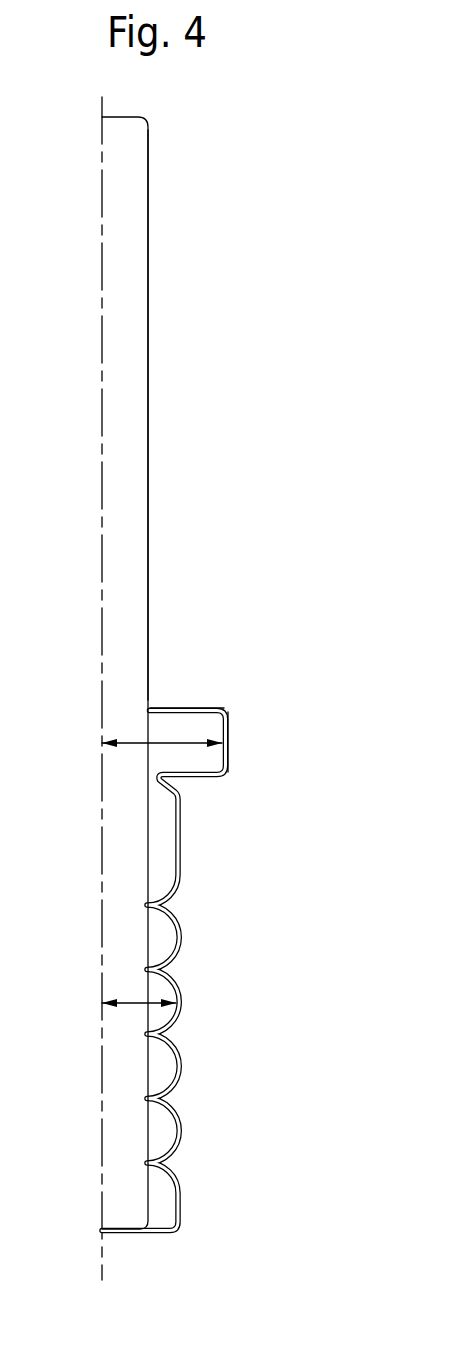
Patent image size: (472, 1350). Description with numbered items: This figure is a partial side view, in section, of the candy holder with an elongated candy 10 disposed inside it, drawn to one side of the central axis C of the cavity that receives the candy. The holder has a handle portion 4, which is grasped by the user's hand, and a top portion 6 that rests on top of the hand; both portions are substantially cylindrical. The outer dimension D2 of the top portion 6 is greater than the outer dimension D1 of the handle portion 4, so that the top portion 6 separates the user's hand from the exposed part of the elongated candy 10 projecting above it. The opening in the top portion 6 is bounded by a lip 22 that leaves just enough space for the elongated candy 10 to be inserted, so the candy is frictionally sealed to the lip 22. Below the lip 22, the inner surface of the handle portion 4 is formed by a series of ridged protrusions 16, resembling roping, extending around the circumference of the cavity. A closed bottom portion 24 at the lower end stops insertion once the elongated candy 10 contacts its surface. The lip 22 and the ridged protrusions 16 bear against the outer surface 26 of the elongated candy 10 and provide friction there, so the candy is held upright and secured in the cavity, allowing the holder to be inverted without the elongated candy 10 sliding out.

The elongated candy 10 is at (165, 121).
The outer surface of the elongated candy 26 is at (138, 621).
The lip 22 is at (149, 708).
The top portion 6 is at (250, 708).
The handle portion 4 is at (250, 778).
The ridged protrusions 16 is at (148, 906).
The closed bottom portion 24 is at (140, 1255).
The outer dimension of the handle portion D1 is at (138, 1001).
The outer dimension of the top portion D2 is at (175, 742).
The central axis C is at (102, 705).